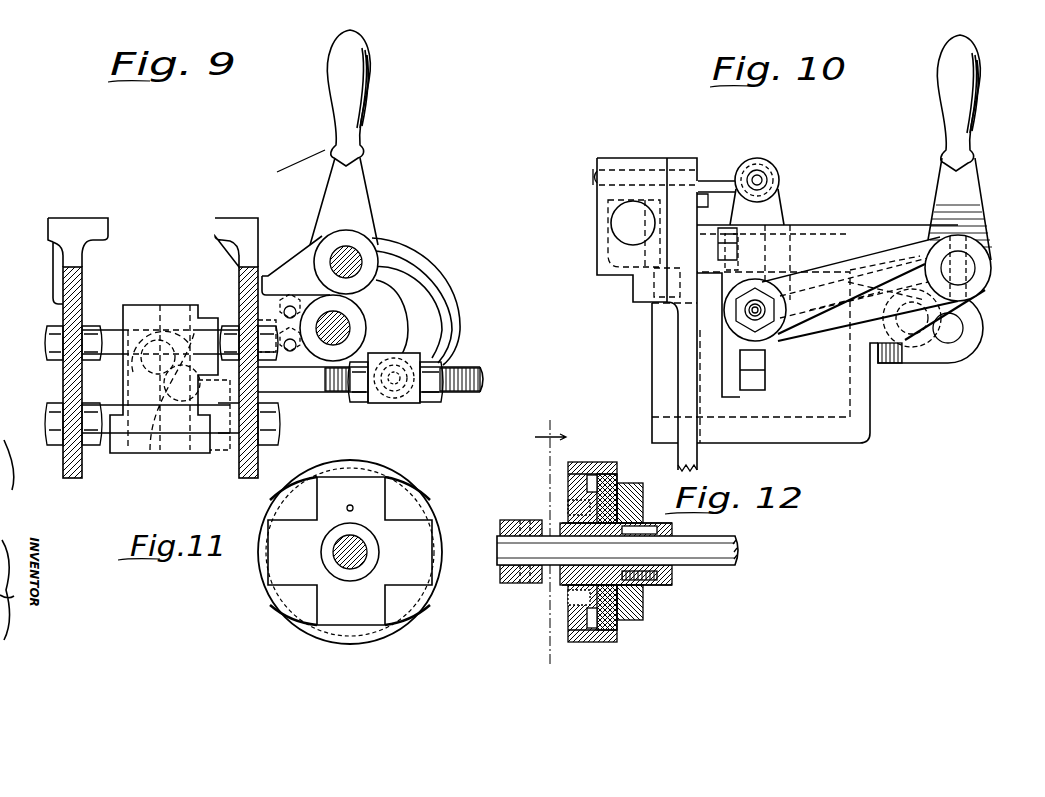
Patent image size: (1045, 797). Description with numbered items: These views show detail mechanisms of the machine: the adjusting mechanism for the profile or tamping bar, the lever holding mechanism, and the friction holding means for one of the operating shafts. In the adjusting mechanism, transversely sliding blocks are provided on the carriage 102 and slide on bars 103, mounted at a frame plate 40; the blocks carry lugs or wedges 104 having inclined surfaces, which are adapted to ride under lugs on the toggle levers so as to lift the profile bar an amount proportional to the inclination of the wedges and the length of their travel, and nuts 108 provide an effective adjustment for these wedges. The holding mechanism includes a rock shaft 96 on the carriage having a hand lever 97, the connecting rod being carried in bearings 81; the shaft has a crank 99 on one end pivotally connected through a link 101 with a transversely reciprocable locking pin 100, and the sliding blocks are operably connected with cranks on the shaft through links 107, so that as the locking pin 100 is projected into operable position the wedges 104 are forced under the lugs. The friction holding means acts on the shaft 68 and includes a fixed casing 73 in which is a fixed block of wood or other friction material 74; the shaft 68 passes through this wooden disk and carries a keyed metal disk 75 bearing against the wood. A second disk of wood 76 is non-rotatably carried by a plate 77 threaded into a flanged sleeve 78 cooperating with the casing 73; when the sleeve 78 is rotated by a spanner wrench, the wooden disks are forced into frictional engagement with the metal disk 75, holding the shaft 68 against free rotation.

In FIG. 9, the frame plate 40 is at (63, 381).
In FIG. 9, the shaft 68 is at (351, 329).
In FIG. 10, the shaft 68 is at (962, 328).
In FIG. 11, the shaft 68 is at (358, 549).
In FIG. 12, the shaft 68 is at (716, 570).
In FIG. 12, the fixed casing 73 is at (620, 492).
In FIG. 12, the fixed block of friction material 74 is at (625, 596).
In FIG. 12, the metal disk 75 is at (572, 503).
In FIG. 11, the second disk of wood 76 is at (405, 500).
In FIG. 12, the second disk of wood 76 is at (585, 598).
In FIG. 11, the plate 77 is at (375, 603).
In FIG. 12, the plate 77 is at (578, 623).
In FIG. 11, the flanged sleeve 78 is at (400, 478).
In FIG. 12, the flanged sleeve 78 is at (597, 642).
In FIG. 10, the bearings 81 is at (597, 232).
In FIG. 9, the rock shaft 96 is at (362, 247).
In FIG. 10, the rock shaft 96 is at (975, 270).
In FIG. 9, the hand lever 97 is at (371, 88).
In FIG. 10, the hand lever 97 is at (976, 130).
In FIG. 10, the crank 99 is at (985, 262).
In FIG. 10, the locking pin 100 is at (595, 166).
In FIG. 10, the link 101 is at (818, 282).
In FIG. 9, the carriage 102 is at (207, 318).
In FIG. 9, the bars 103 is at (107, 328).
In FIG. 9, the wedges 104 is at (260, 393).
In FIG. 9, the links 107 is at (468, 365).
In FIG. 9, the nuts 108 is at (362, 403).